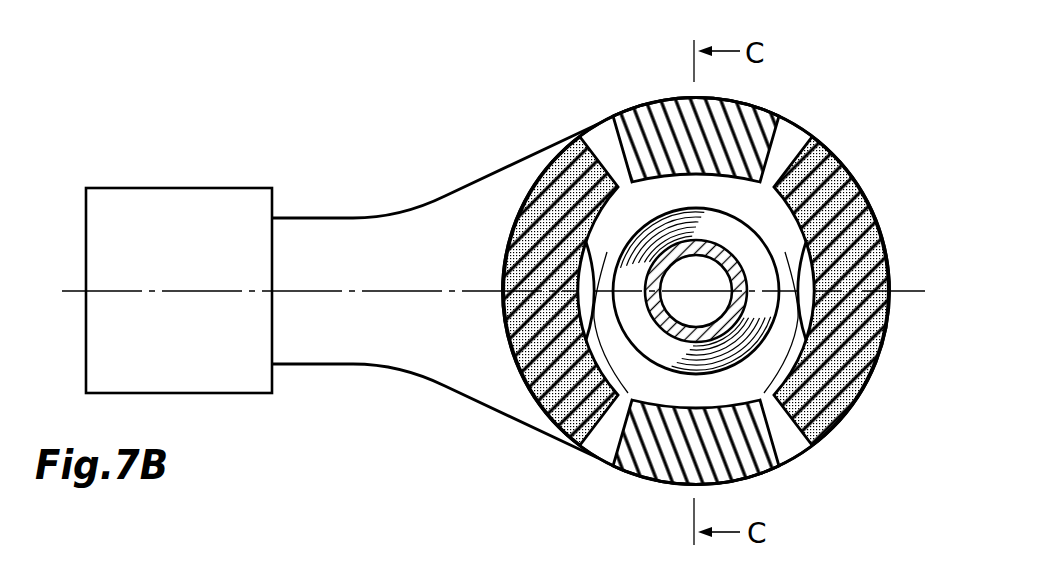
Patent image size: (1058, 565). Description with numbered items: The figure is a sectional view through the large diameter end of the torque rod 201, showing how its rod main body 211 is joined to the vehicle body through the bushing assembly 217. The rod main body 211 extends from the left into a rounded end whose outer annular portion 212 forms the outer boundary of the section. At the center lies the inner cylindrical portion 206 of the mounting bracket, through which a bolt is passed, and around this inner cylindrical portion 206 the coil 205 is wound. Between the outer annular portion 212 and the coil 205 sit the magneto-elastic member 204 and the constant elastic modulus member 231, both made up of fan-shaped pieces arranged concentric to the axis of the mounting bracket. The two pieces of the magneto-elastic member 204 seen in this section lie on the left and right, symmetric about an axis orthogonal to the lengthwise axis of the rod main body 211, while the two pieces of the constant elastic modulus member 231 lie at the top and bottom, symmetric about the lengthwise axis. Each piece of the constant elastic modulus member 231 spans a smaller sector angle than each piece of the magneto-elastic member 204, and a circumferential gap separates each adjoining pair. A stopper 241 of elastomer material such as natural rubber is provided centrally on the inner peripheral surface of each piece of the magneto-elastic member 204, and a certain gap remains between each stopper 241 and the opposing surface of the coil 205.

The torque rod 201 is at (182, 127).
The rod main body 211 is at (343, 217).
The outer annular portion 212 is at (805, 449).
The bushing assembly 217 is at (610, 72).
The magneto-elastic member 204 is at (518, 203).
The constant elastic modulus member 231 is at (653, 100).
The coil 205 is at (655, 215).
The inner cylindrical portion 206 is at (722, 255).
The stopper 241 is at (628, 393).